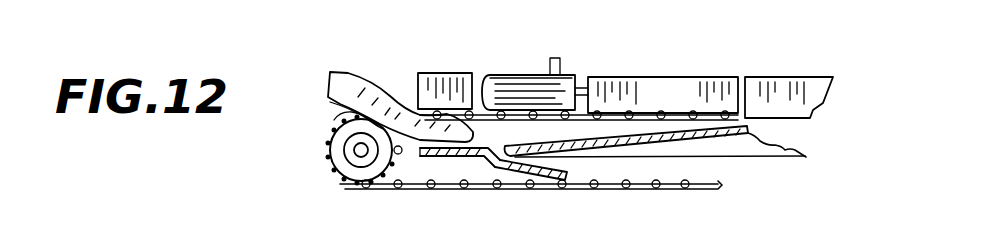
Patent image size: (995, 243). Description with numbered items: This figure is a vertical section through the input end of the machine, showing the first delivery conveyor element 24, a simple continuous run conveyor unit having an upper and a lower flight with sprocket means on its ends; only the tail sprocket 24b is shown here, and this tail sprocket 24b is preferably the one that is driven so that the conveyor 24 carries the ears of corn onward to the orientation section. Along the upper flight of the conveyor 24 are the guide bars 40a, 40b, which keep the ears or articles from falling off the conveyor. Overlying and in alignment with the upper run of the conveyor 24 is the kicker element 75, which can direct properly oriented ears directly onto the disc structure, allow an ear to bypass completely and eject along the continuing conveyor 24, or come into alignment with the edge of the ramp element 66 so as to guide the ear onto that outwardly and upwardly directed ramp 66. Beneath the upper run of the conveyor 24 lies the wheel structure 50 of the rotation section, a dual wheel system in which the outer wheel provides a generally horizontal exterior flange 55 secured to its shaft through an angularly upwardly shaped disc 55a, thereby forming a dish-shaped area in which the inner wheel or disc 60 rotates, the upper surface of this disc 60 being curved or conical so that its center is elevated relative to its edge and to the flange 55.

The first delivery conveyor element 24 is at (476, 112).
The tail sprocket 24b is at (347, 163).
The ramp element 66 is at (353, 83).
The kicker element 75 is at (520, 74).
The inner wheel or disc 60 is at (612, 135).
The guide bar 40a is at (688, 77).
The guide bar 40b is at (792, 77).
The wheel structure 50 is at (797, 142).
The exterior flange 55 is at (456, 158).
The angularly upwardly shaped disc 55a is at (554, 180).